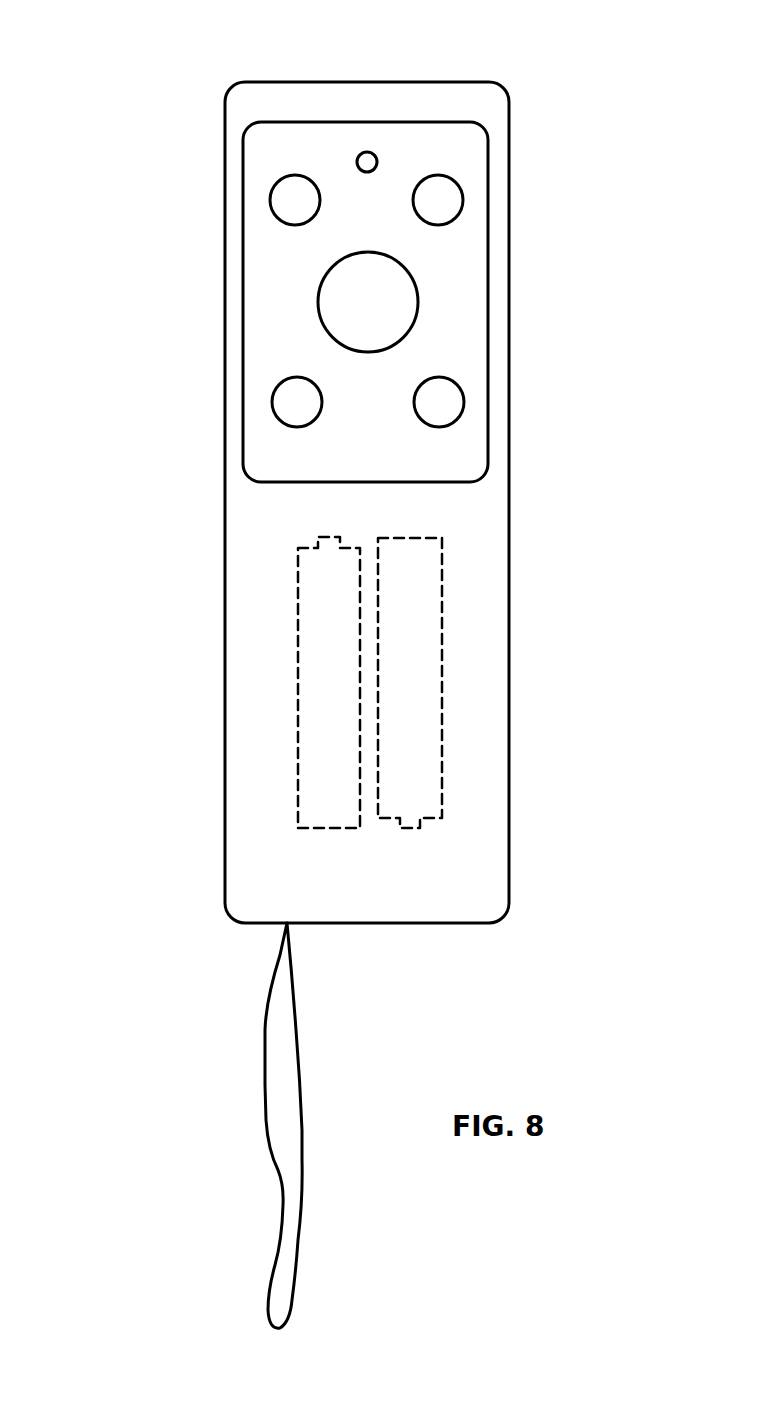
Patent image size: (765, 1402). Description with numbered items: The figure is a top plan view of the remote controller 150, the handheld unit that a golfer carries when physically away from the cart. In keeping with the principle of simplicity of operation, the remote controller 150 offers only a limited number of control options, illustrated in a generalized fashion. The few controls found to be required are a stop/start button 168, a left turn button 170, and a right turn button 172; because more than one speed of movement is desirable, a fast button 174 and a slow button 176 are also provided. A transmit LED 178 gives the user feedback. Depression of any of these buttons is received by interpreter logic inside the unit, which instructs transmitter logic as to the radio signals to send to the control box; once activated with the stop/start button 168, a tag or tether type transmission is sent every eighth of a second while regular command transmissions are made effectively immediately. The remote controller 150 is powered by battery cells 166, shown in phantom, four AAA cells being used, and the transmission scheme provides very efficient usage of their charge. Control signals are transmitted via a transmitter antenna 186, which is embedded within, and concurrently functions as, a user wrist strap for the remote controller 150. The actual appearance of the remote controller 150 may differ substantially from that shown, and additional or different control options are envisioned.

The remote controller 150 is at (150, 560).
The battery cells 166 is at (328, 685).
The stop/start button 168 is at (368, 302).
The left turn button 170 is at (295, 200).
The right turn button 172 is at (438, 200).
The fast button 174 is at (439, 402).
The slow button 176 is at (297, 402).
The transmit LED 178 is at (367, 152).
The transmitter antenna 186 is at (267, 1085).